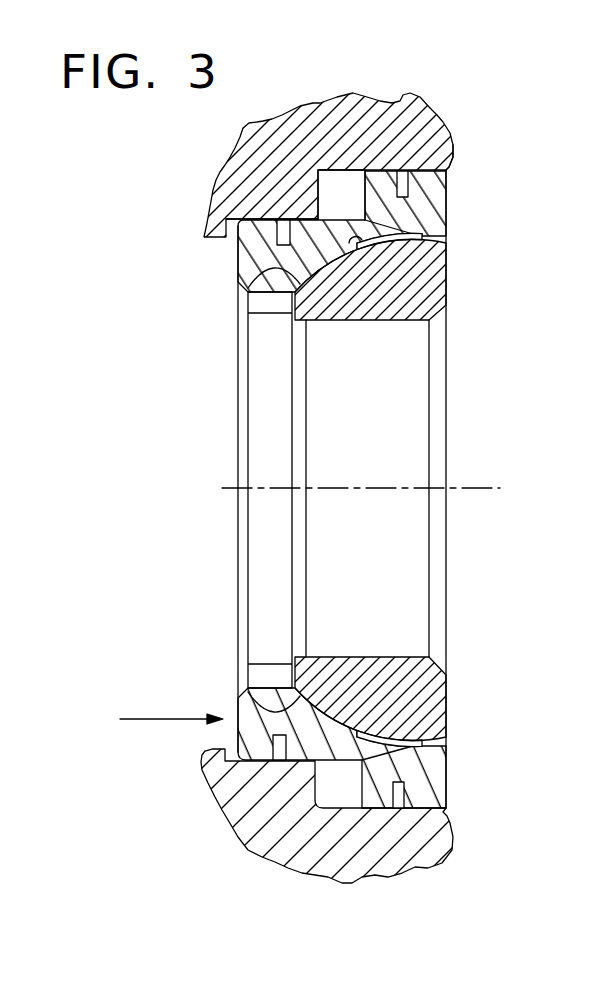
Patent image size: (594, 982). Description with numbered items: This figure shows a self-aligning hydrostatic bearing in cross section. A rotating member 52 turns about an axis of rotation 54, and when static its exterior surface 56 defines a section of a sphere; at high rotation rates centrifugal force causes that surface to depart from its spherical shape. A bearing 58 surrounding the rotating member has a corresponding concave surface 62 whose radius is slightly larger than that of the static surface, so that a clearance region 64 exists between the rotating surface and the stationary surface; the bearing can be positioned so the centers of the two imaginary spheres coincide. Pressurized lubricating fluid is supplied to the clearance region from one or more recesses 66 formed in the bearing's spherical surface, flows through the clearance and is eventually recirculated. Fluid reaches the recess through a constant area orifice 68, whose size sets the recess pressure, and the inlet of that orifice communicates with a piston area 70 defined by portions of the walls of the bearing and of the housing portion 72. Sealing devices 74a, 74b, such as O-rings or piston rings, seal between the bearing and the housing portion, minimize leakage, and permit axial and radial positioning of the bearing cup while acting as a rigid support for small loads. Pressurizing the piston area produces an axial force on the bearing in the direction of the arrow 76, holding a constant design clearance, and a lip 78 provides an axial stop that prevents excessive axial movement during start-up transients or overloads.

The rotating member 52 is at (447, 268).
The axis of rotation 54 is at (480, 487).
The exterior surface 56 is at (337, 283).
The bearing 58 is at (447, 189).
The concave surface 62 is at (238, 281).
The clearance region 64 is at (447, 230).
The recess 66 is at (360, 237).
The constant area orifice 68 is at (330, 171).
The piston area 70 is at (365, 171).
The housing portion 72 is at (390, 116).
The sealing device 74a is at (277, 219).
The sealing device 74b is at (451, 153).
The arrow 76 is at (167, 718).
The lip 78 is at (203, 765).